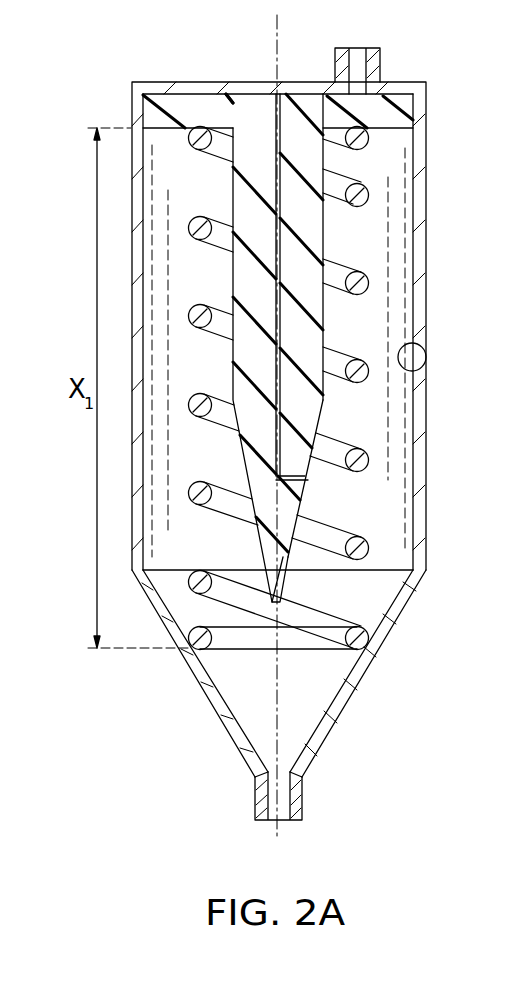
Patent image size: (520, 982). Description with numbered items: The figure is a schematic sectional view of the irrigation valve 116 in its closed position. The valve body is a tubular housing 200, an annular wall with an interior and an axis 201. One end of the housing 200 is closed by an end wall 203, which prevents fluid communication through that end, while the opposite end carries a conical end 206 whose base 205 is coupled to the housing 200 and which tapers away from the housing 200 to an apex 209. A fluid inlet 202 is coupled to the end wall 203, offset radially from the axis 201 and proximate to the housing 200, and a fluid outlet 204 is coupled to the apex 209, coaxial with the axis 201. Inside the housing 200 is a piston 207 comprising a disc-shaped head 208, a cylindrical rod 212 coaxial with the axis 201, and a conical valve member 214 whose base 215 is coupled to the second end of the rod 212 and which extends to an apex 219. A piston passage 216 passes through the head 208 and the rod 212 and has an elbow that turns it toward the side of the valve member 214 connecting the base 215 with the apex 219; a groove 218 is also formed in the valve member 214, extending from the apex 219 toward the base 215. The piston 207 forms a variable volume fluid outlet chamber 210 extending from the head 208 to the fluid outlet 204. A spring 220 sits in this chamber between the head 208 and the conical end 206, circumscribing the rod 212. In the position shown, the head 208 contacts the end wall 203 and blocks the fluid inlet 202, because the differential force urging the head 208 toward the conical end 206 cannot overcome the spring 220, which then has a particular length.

The irrigation valve 116 is at (191, 77).
The axis 201 is at (276, 26).
The fluid inlet 202 is at (385, 66).
The end wall 203 is at (133, 88).
The head 208 is at (424, 110).
The housing 200 is at (427, 270).
The piston 207 is at (222, 211).
The rod 212 is at (325, 340).
The fluid outlet chamber 210 is at (427, 357).
The base 215 is at (325, 398).
The valve member 214 is at (243, 462).
The piston passage 216 is at (306, 481).
The spring 220 is at (227, 512).
The groove 218 is at (290, 576).
The base 205 is at (428, 570).
The conical end 206 is at (345, 710).
The apex 219 is at (278, 607).
The apex 209 is at (305, 777).
The fluid outlet 204 is at (255, 795).